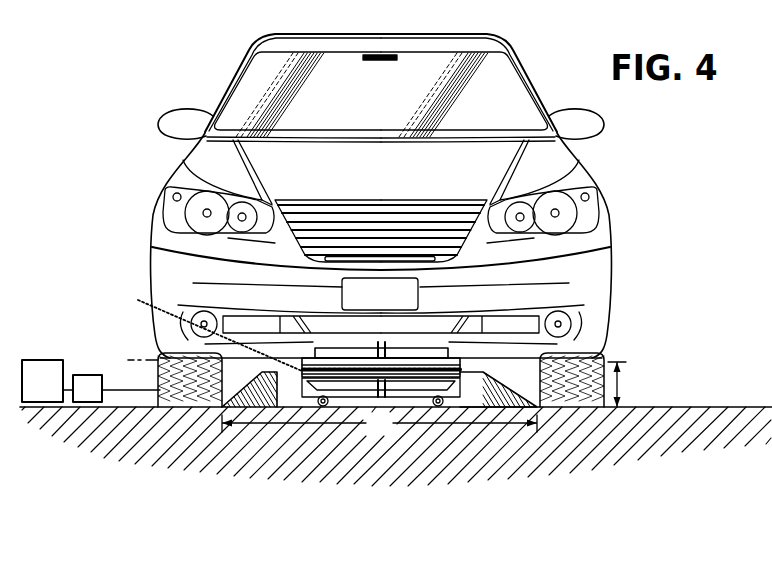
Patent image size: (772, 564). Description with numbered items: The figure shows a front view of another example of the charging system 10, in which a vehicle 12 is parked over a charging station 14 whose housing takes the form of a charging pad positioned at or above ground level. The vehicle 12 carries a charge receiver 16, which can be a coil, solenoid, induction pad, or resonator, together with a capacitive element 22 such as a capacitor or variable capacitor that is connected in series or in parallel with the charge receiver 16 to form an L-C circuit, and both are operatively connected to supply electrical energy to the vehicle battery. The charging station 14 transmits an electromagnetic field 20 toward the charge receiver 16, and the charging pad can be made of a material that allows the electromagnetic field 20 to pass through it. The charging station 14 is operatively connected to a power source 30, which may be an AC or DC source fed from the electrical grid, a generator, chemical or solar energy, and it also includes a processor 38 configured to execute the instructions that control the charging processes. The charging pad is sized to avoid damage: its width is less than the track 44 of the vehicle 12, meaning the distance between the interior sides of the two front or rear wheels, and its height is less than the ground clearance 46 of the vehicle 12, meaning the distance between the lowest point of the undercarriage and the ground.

The charging system 10 is at (396, 273).
The vehicle 12 is at (609, 205).
The charging station 14 is at (697, 468).
The charge receiver 16 is at (463, 360).
The electromagnetic field 20 is at (208, 329).
The capacitive element 22 is at (383, 348).
The power source 30 is at (46, 404).
The processor 38 is at (94, 404).
The track 44 is at (379, 424).
The ground clearance 46 is at (620, 380).